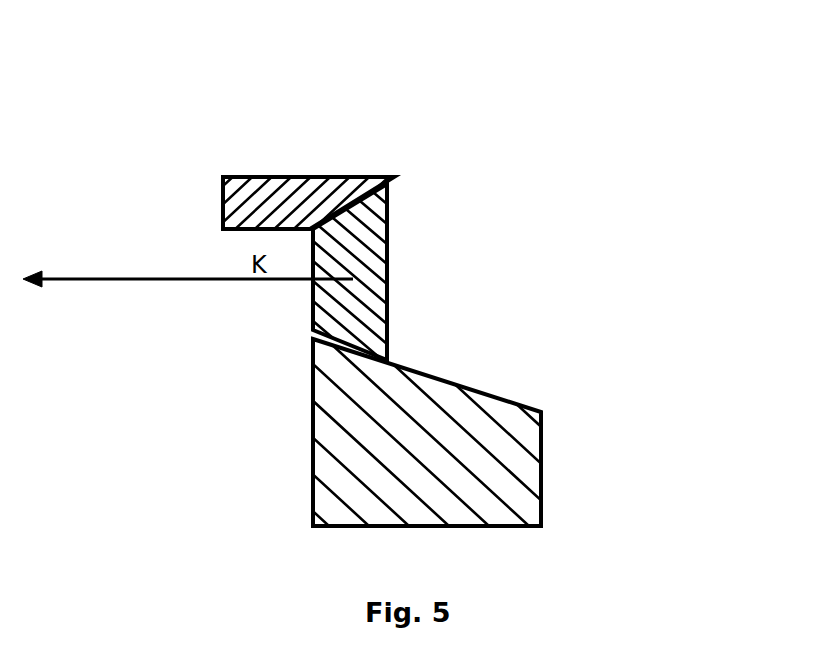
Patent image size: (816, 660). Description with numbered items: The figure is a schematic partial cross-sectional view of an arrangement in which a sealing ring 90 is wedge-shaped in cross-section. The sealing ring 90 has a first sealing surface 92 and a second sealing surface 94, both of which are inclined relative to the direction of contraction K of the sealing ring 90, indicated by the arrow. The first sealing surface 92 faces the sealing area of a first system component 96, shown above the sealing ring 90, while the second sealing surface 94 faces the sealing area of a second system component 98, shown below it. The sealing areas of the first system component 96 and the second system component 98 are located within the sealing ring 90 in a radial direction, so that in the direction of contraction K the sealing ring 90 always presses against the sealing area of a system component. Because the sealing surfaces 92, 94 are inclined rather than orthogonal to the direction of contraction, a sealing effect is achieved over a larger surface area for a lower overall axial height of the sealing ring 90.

The sealing ring 90 is at (378, 330).
The first sealing surface 92 is at (338, 207).
The second sealing surface 94 is at (333, 343).
The first system component 96 is at (255, 193).
The second system component 98 is at (497, 507).